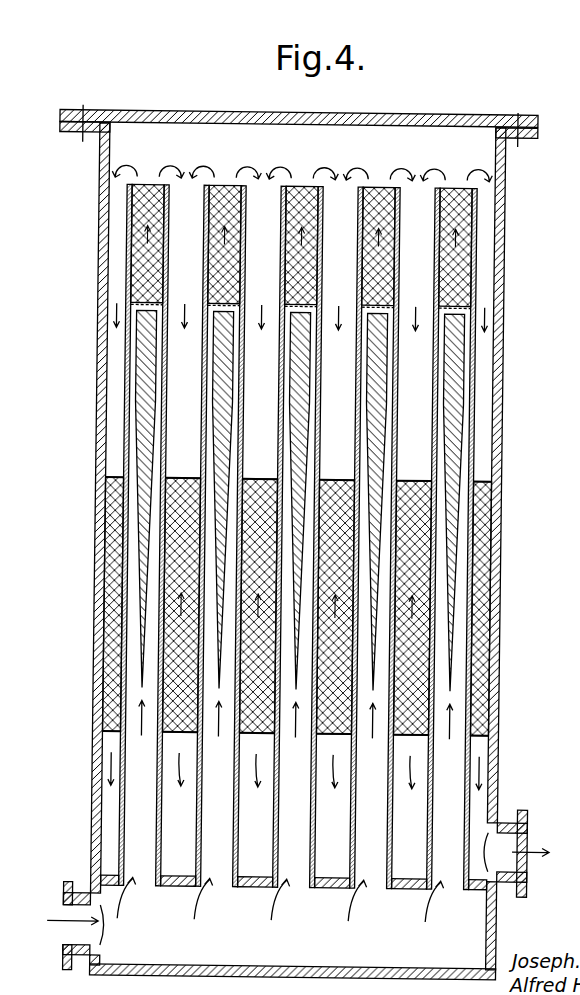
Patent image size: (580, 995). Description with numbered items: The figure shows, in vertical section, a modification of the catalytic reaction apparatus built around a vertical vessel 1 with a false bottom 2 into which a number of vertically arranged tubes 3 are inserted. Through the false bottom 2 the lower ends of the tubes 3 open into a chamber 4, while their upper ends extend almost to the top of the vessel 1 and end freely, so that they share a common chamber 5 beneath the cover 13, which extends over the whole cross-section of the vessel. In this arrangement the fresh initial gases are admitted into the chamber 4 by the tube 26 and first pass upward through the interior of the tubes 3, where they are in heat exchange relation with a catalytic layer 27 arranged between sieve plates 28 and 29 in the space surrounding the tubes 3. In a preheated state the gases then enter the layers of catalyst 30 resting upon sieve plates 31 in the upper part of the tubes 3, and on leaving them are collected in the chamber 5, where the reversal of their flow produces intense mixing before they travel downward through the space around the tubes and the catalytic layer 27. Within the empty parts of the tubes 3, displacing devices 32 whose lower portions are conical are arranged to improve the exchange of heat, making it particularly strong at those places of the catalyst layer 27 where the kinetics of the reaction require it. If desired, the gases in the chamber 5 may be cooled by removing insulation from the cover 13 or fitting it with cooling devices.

The cover 13 is at (168, 115).
The chamber 5 is at (302, 157).
The layers of catalyst 30 is at (148, 228).
The sieve plates 31 is at (135, 302).
The vessel 1 is at (104, 339).
The tubes 3 is at (125, 371).
The displacing devices 32 is at (139, 394).
The sieve plate 28 is at (118, 476).
The catalytic layer 27 is at (112, 519).
The sieve plate 29 is at (106, 736).
The false bottom 2 is at (168, 887).
The chamber 4 is at (293, 928).
The tube 26 is at (74, 946).